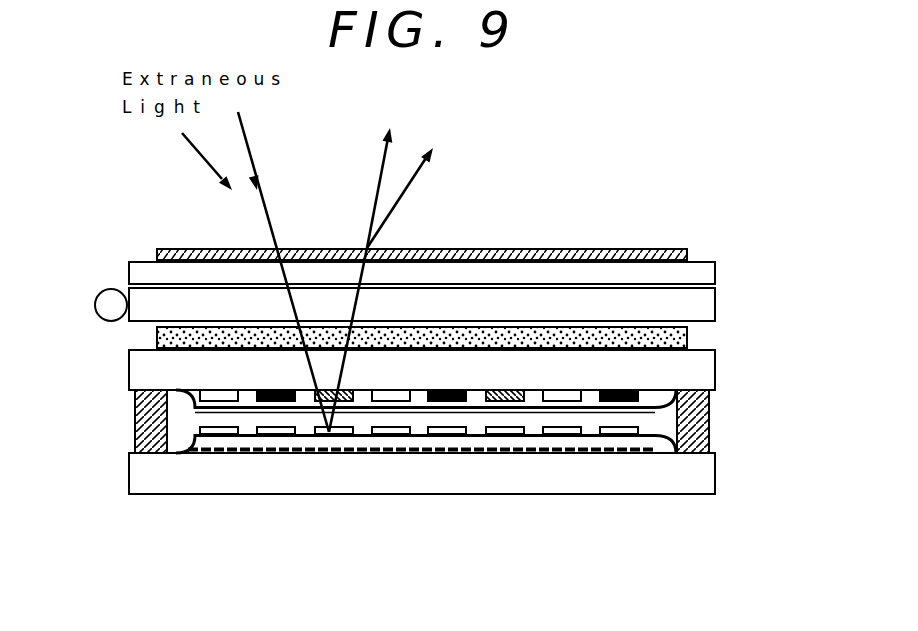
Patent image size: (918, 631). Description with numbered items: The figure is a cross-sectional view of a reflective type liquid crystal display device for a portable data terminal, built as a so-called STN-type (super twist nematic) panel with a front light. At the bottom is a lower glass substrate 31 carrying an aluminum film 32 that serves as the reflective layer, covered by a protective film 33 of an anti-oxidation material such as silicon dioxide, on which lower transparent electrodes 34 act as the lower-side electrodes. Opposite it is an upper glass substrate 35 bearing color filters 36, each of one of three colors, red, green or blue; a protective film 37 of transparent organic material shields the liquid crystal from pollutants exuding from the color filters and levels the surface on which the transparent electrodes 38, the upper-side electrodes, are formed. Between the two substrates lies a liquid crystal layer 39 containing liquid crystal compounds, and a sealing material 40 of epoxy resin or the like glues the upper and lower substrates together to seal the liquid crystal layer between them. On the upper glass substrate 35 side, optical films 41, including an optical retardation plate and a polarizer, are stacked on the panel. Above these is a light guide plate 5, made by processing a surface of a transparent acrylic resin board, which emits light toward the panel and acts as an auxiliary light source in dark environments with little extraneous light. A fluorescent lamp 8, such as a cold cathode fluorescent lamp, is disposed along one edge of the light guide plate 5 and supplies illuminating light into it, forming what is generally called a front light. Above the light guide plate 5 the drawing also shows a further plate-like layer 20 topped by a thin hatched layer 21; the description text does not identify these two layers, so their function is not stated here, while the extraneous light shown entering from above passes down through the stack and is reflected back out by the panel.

The fluorescent lamp 8 is at (96, 300).
The reflecting layer 21 is at (687, 252).
The light guide plate 20 is at (703, 270).
The light guide plate 5 is at (703, 302).
The optical films 41 is at (688, 330).
The upper glass substrate 35 is at (128, 367).
The color filters 36 is at (623, 394).
The protective film 37 is at (707, 408).
The protective film 33 is at (660, 440).
The lower glass substrate 31 is at (143, 481).
The aluminum film 32 is at (628, 451).
The lower transparent electrodes 34 is at (555, 437).
The transparent electrodes 38 is at (477, 414).
The liquid crystal layer 39 is at (178, 417).
The sealing material 40 is at (135, 430).